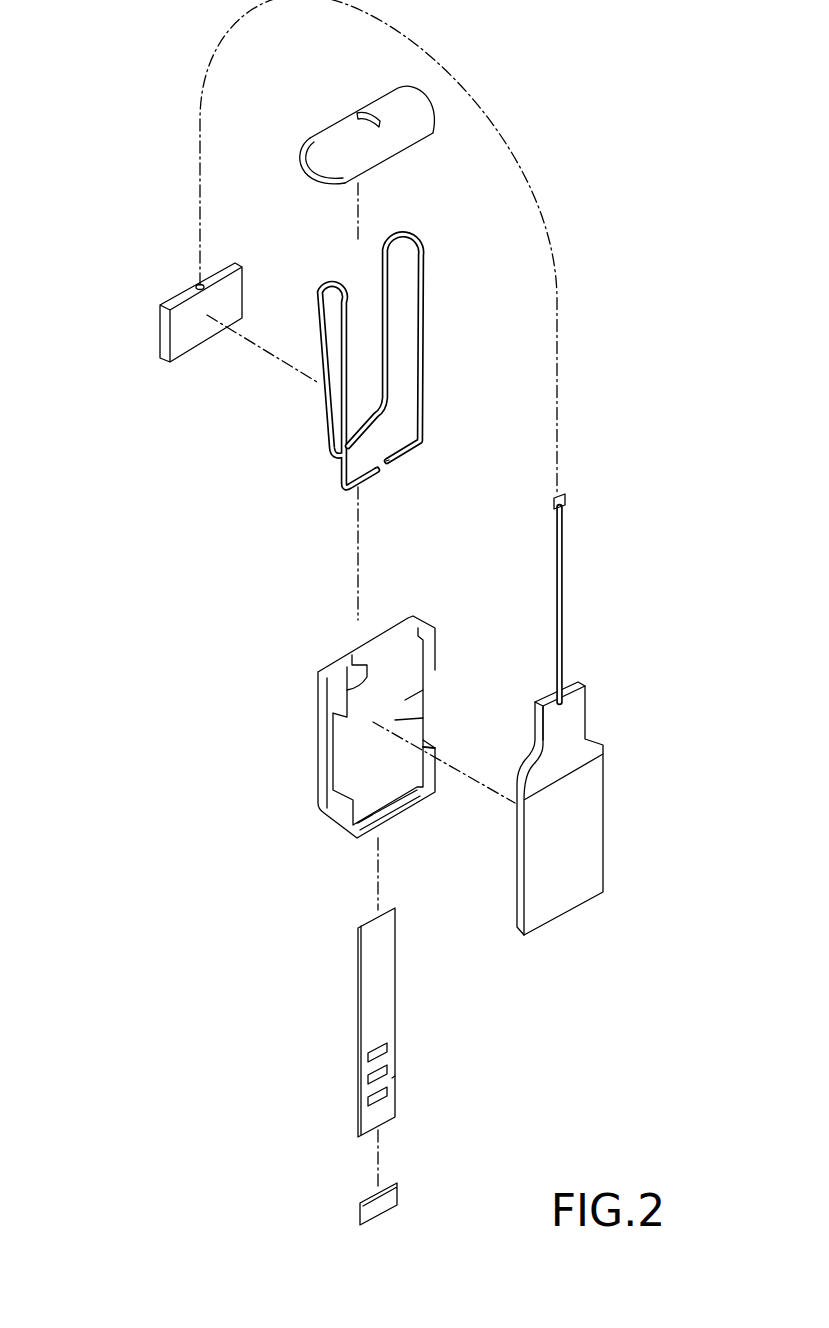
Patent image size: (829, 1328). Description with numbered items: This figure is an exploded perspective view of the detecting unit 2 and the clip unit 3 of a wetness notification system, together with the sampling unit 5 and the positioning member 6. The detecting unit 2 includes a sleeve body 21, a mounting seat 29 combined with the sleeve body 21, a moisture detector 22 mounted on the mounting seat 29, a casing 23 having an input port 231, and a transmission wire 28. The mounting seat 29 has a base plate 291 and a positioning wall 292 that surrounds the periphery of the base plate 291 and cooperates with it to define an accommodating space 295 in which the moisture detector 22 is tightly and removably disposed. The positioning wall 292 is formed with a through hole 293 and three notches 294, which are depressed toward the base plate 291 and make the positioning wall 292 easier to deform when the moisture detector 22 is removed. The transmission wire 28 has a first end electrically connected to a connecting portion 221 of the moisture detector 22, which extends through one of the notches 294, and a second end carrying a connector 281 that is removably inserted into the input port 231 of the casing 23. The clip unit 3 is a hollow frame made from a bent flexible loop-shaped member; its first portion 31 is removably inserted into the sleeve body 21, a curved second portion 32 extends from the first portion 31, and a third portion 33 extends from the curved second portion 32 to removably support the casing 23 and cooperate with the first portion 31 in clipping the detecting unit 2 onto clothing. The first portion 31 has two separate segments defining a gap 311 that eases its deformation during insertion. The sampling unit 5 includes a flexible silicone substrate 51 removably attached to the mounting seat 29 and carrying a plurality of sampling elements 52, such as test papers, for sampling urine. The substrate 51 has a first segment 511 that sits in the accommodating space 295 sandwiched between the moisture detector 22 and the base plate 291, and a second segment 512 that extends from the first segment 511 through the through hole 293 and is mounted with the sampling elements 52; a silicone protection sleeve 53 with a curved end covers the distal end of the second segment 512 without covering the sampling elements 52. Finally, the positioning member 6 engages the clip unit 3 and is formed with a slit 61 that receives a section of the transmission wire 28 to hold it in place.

The detecting unit 2 is at (248, 713).
The sleeve body 21 is at (327, 812).
The moisture detector 22 is at (623, 714).
The connecting portion 221 is at (572, 714).
The casing 23 is at (154, 295).
The input port 231 is at (197, 283).
The transmission wire 28 is at (608, 598).
The connector 281 is at (567, 502).
The mounting seat 29 is at (376, 729).
The base plate 291 is at (410, 722).
The positioning wall 292 is at (413, 803).
The through hole 293 is at (337, 826).
The notches 294 is at (383, 647).
The accommodating space 295 is at (397, 697).
The clip unit 3 is at (362, 363).
The first portion 31 is at (437, 363).
The gap 311 is at (378, 465).
The curved second portion 32 is at (423, 252).
The third portion 33 is at (327, 450).
The sampling unit 5 is at (409, 1066).
The substrate 51 is at (414, 1022).
The first segment 511 is at (392, 987).
The second segment 512 is at (447, 1087).
The sampling elements 52 is at (368, 1098).
The protection sleeve 53 is at (397, 1192).
The positioning member 6 is at (349, 113).
The slit 61 is at (367, 110).